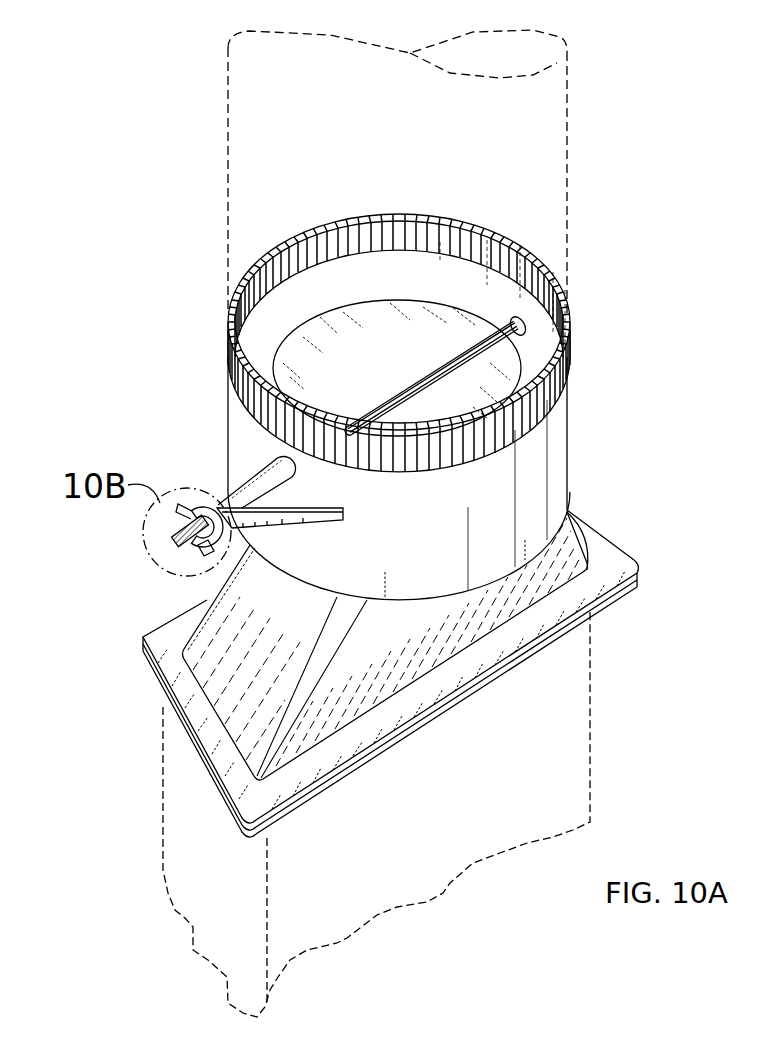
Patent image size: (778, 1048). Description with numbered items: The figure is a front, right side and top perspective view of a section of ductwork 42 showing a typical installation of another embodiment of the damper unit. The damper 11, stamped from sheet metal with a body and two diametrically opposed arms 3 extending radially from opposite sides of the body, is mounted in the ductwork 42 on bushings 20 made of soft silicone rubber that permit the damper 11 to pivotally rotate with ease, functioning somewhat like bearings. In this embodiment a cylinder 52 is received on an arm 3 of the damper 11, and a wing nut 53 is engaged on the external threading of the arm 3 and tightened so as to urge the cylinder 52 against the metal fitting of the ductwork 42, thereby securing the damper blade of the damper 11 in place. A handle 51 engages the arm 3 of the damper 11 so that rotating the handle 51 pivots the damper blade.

The damper 11 is at (343, 268).
The bushing 20 is at (518, 318).
The section of ductwork 42 is at (555, 438).
The handle 51 is at (300, 526).
The cylinder 52 is at (260, 478).
The wing nut 53 is at (182, 503).
The arm 3 is at (182, 540).